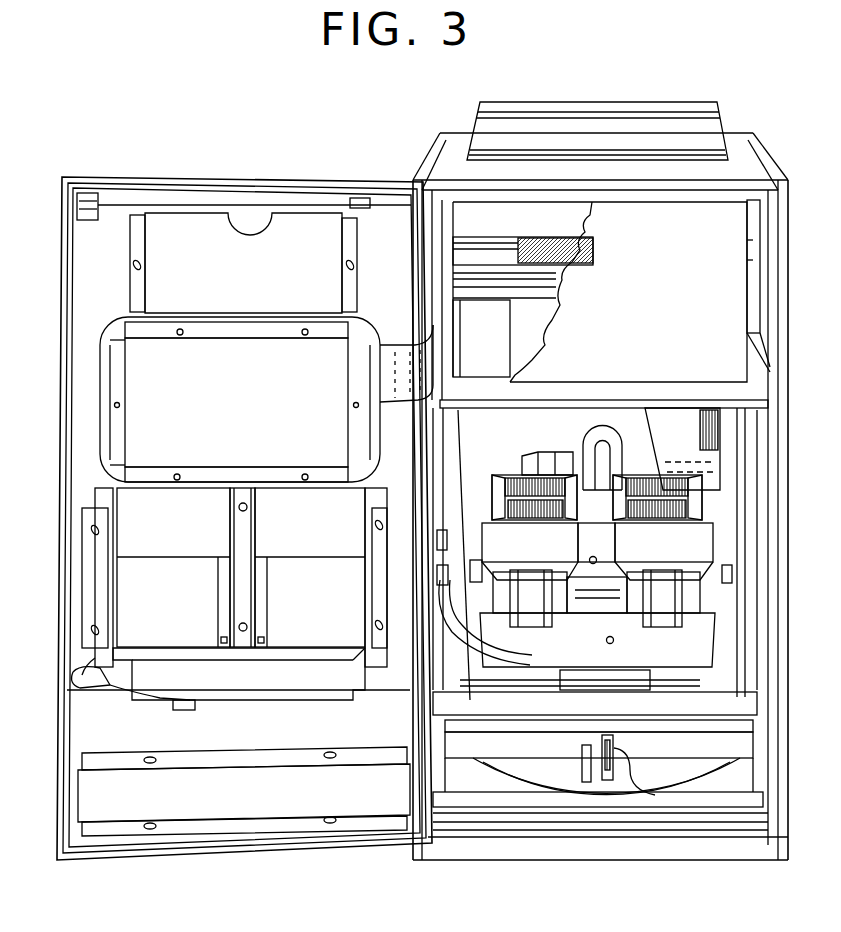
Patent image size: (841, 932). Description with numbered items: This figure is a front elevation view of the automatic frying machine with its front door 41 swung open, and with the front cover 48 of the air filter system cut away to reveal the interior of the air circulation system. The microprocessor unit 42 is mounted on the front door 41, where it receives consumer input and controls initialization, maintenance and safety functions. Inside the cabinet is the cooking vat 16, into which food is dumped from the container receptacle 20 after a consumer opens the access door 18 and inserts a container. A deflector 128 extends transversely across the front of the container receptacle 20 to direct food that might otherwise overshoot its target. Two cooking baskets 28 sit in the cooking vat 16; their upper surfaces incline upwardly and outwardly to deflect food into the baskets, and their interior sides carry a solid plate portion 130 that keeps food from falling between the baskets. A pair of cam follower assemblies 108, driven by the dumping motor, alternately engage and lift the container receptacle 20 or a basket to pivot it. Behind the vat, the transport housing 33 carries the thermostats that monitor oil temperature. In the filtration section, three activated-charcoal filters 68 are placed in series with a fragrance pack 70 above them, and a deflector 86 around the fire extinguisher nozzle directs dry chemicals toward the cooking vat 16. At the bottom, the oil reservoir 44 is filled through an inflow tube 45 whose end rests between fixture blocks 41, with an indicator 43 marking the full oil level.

The cooking vat 16 is at (708, 500).
The access door 18 is at (167, 612).
The container receptacle 20 is at (652, 627).
The cooking basket 28 is at (505, 476).
The transport housing 33 is at (547, 452).
The front door 41 is at (152, 192).
The microprocessor unit 42 is at (180, 414).
The indicator 43 is at (606, 782).
The oil reservoir 44 is at (723, 750).
The inflow tube 45 is at (640, 797).
The front cover 48 is at (705, 299).
The activated-charcoal filters 68 is at (553, 275).
The fragrance pack 70 is at (487, 237).
The deflector 86 is at (695, 428).
The cam follower assemblies 108 is at (733, 572).
The deflector 128 is at (484, 551).
The solid plate portion 130 is at (615, 487).